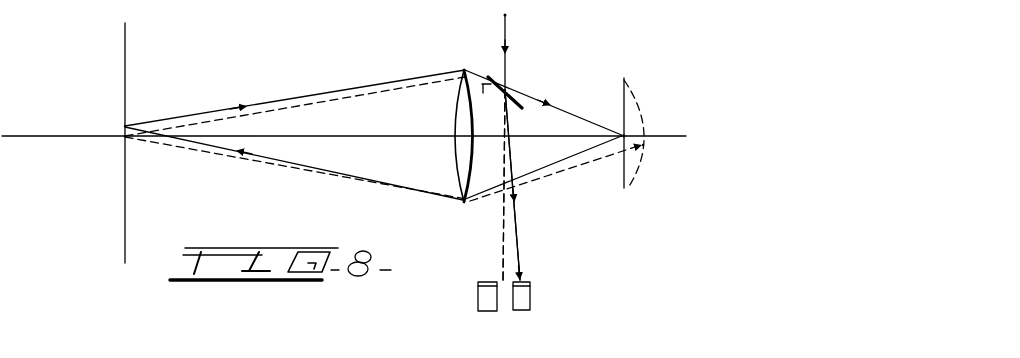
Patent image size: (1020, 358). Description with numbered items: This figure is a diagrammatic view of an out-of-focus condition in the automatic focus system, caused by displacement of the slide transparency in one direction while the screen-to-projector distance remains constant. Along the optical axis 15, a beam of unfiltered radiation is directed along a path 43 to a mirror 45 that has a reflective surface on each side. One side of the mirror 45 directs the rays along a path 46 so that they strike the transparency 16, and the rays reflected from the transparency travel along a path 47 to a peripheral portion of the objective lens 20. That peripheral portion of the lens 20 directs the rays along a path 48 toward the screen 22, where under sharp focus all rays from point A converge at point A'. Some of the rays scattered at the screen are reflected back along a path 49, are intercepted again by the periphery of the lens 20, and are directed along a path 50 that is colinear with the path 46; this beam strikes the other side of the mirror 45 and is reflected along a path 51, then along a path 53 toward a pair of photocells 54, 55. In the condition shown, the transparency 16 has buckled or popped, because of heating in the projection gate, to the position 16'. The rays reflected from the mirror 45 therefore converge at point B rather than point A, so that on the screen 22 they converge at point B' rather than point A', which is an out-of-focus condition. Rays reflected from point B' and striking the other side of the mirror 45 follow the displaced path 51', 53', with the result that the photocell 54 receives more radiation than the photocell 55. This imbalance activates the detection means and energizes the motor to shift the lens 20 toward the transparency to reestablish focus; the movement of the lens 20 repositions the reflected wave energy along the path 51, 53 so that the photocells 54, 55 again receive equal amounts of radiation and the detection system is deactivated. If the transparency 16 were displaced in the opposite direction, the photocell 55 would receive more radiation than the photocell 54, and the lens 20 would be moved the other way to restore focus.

The optical axis 15 is at (39, 136).
The screen 22 is at (127, 96).
The objective lens 20 is at (455, 125).
The mirror 45 is at (490, 78).
The path 50 is at (488, 104).
The path 43 is at (508, 75).
The path 46 is at (574, 107).
The path 47 is at (527, 175).
The path 48 is at (299, 159).
The path or beam 49 is at (290, 94).
The transparency 16 is at (644, 133).
The buckled position of transparency 16' is at (611, 122).
The path or beam 51 is at (468, 185).
The path 53 is at (504, 185).
The path 51' is at (551, 185).
The path 53' is at (512, 185).
The photocell 54 is at (524, 302).
The photocell 55 is at (487, 302).
The point A is at (610, 118).
The point B is at (655, 153).
The point A' is at (137, 156).
The point B' is at (109, 112).